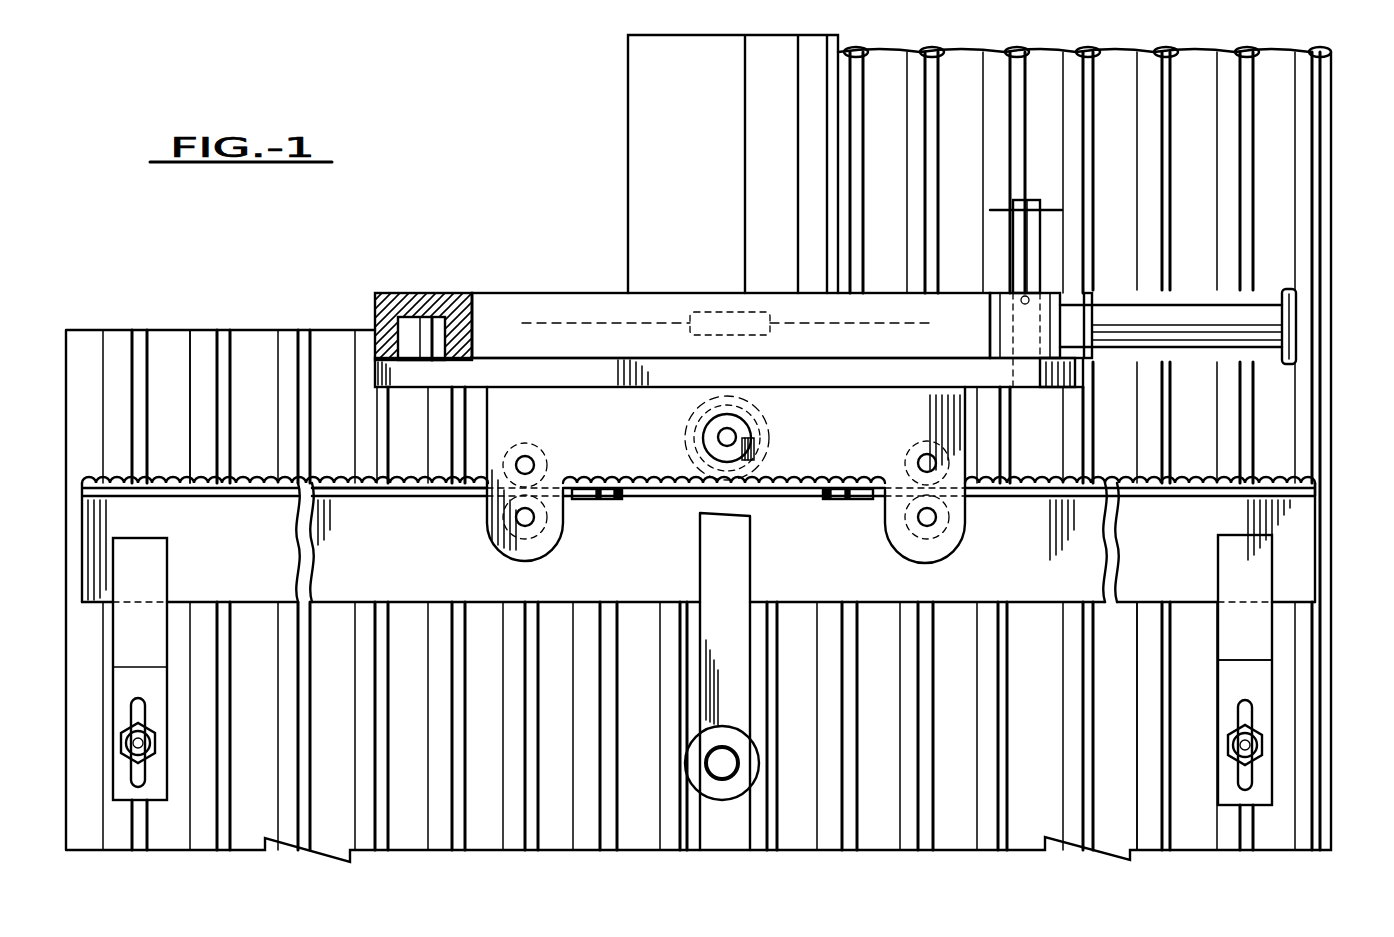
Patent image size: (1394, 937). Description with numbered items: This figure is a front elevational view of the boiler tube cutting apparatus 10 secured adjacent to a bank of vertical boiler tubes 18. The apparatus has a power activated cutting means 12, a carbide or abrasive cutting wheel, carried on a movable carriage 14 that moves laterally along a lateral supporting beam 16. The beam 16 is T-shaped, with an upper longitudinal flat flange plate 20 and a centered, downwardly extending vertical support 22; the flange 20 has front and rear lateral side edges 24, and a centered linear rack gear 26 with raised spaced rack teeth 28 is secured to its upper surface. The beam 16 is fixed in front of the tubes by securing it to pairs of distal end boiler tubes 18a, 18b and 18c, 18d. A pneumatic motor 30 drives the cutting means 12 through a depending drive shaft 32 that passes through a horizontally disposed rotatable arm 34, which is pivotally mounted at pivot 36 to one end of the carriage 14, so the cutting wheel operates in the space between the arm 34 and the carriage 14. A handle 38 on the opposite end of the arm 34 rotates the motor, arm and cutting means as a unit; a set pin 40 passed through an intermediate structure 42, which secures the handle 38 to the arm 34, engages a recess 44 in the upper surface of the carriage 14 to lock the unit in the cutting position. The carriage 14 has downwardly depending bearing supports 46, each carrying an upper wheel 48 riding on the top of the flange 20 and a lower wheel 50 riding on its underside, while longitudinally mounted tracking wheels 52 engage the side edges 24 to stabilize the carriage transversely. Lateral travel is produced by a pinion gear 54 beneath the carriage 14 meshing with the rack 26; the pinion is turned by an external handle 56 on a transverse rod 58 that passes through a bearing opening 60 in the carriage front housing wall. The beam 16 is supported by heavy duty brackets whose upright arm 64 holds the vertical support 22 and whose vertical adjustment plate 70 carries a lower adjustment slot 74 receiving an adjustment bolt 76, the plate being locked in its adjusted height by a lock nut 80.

The boiler tube cutting apparatus 10 is at (588, 222).
The power activated cutting means 12 is at (578, 318).
The movable carriage 14 is at (370, 372).
The lateral supporting beam 16 is at (265, 537).
The boiler tubes 18 is at (985, 60).
The distal end boiler tube 18a is at (112, 330).
The distal end boiler tube 18b is at (190, 330).
The distal end boiler tube 18c is at (1185, 672).
The distal end boiler tube 18d is at (1300, 650).
The upper longitudinal flat flange plate 20 is at (380, 488).
The vertical support 22 is at (487, 602).
The lateral side edges 24 is at (1300, 493).
The linear rack gear 26 is at (1300, 480).
The rack teeth 28 is at (1285, 480).
The motor 30 is at (635, 80).
The drive shaft 32 is at (716, 298).
The rotatable arm 34 is at (490, 300).
The pivot 36 is at (413, 322).
The handle 38 is at (1195, 347).
The set pin 40 is at (1027, 205).
The intermediate structure 42 is at (1040, 292).
The recess 44 is at (1035, 380).
The bearing supports 46 is at (520, 555).
The upper wheel 48 is at (535, 448).
The lower wheel 50 is at (540, 532).
The tracking wheel 52 is at (605, 500).
The pinion gear 54 is at (765, 425).
The external handle 56 is at (690, 765).
The transverse rod 58 is at (720, 438).
The bearing opening 60 is at (752, 437).
The upright arm 64 is at (160, 555).
The vertical adjustment plate 70 is at (1262, 790).
The lower adjustment slot 74 is at (136, 712).
The adjustment bolt 76 is at (130, 742).
The lock nut 80 is at (128, 752).